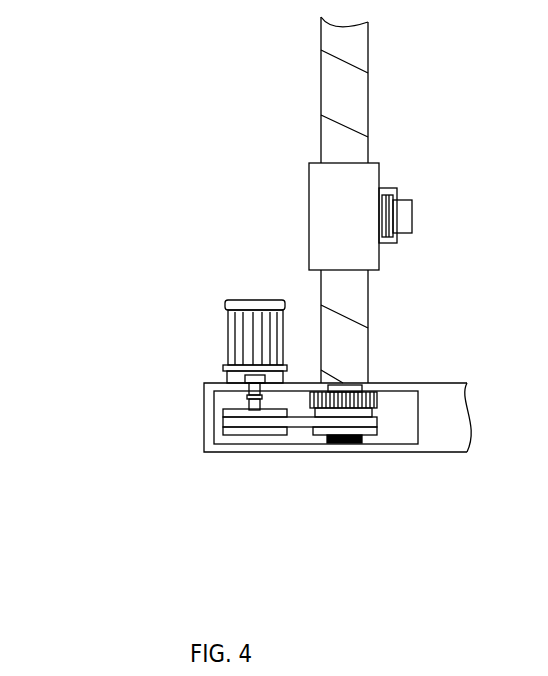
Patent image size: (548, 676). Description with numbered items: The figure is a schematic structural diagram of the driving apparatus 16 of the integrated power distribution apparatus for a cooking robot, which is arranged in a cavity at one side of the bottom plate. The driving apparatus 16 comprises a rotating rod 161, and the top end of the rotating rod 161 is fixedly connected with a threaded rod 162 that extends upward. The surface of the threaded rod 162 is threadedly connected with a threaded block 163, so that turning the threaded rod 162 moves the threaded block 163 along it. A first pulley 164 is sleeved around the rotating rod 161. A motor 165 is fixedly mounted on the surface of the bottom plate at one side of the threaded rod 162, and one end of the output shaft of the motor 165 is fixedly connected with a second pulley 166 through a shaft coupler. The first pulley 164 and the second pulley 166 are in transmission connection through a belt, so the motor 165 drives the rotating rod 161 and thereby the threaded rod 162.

The driving apparatus 16 is at (99, 38).
The rotating rod 161 is at (321, 376).
The threaded rod 162 is at (342, 93).
The threaded block 163 is at (328, 197).
The first pulley 164 is at (327, 443).
The motor 165 is at (253, 300).
The second pulley 166 is at (228, 433).